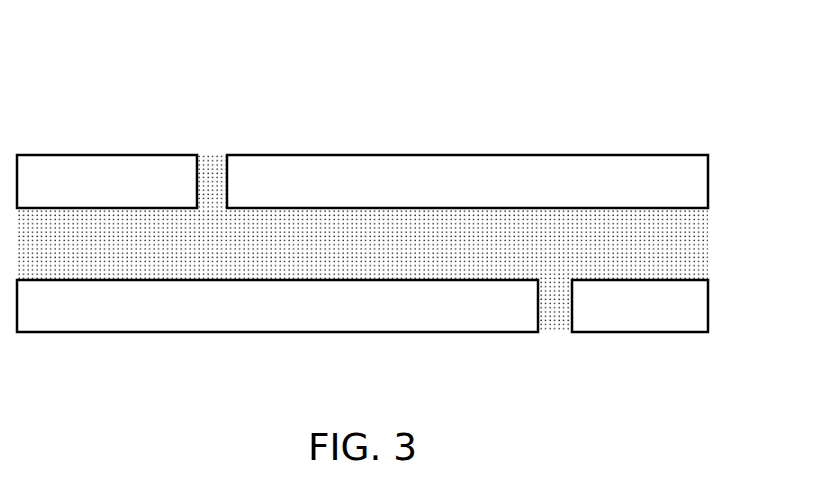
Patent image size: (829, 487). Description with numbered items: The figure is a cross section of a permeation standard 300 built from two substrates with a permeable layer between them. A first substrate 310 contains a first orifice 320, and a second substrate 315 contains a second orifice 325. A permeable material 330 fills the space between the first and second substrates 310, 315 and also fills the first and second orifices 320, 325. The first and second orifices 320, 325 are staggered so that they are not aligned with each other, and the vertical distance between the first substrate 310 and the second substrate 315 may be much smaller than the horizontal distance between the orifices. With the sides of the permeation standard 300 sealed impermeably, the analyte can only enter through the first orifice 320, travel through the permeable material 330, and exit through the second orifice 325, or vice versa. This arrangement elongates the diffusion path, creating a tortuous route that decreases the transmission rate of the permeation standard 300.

The permeation standard 300 is at (411, 222).
The first substrate 310 is at (540, 155).
The second substrate 315 is at (602, 332).
The first orifice 320 is at (218, 141).
The second orifice 325 is at (551, 345).
The permeable material 330 is at (707, 233).